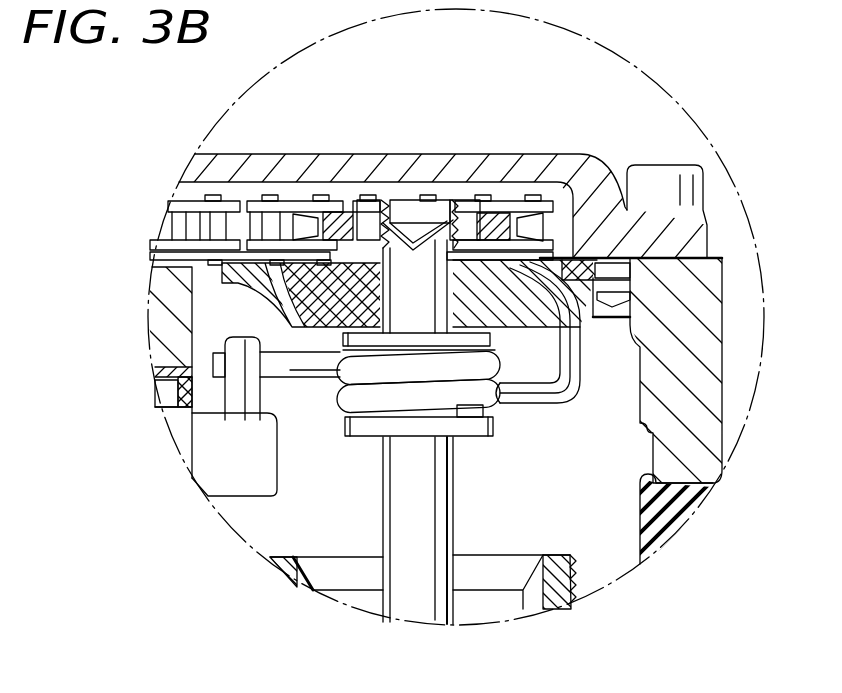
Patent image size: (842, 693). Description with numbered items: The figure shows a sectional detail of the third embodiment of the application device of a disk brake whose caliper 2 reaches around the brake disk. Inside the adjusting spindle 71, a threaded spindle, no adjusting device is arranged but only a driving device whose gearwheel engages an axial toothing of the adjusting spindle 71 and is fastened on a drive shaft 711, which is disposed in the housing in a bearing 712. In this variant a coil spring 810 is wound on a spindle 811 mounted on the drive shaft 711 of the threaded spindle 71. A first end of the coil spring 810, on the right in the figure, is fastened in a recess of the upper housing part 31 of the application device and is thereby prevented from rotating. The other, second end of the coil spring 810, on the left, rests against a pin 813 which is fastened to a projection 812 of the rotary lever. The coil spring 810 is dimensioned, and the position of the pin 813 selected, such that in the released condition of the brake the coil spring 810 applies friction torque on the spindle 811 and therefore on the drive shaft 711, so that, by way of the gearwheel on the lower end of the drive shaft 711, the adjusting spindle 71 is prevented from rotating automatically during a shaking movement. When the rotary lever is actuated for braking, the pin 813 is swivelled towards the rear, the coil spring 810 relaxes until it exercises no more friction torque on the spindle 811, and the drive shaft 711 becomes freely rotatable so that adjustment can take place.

The caliper 2 is at (670, 510).
The upper housing part 31 is at (720, 335).
The adjusting spindle 71 is at (572, 598).
The drive shaft 711 is at (432, 605).
The bearing 712 is at (333, 275).
The coil spring 810 is at (522, 405).
The spindle 811 is at (380, 428).
The projection 812 is at (230, 473).
The pin 813 is at (247, 392).